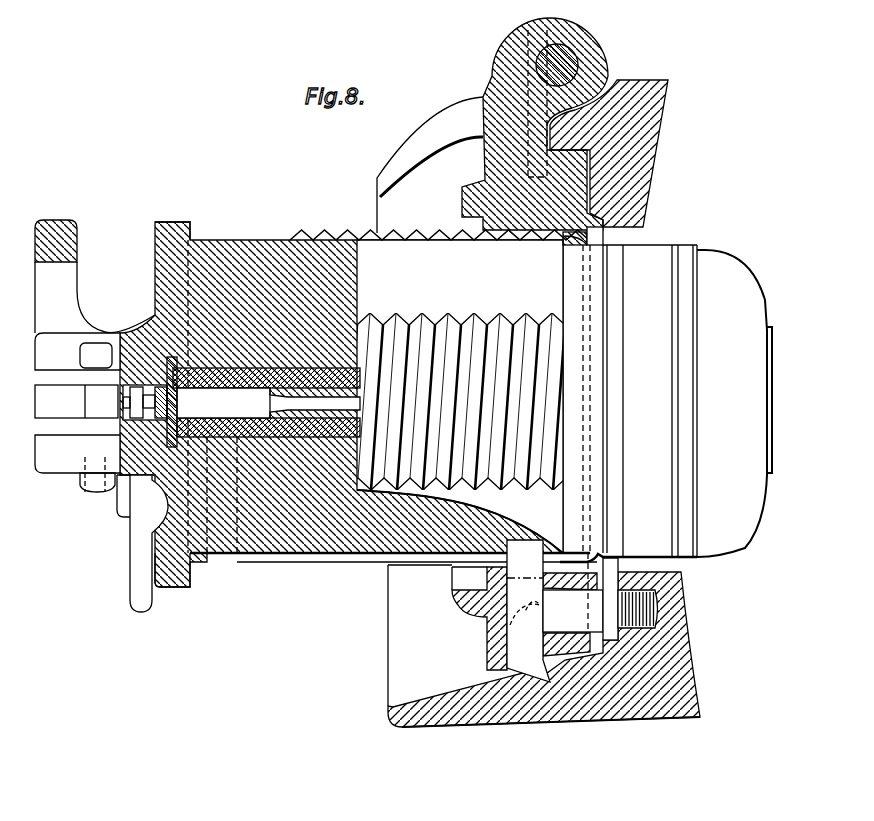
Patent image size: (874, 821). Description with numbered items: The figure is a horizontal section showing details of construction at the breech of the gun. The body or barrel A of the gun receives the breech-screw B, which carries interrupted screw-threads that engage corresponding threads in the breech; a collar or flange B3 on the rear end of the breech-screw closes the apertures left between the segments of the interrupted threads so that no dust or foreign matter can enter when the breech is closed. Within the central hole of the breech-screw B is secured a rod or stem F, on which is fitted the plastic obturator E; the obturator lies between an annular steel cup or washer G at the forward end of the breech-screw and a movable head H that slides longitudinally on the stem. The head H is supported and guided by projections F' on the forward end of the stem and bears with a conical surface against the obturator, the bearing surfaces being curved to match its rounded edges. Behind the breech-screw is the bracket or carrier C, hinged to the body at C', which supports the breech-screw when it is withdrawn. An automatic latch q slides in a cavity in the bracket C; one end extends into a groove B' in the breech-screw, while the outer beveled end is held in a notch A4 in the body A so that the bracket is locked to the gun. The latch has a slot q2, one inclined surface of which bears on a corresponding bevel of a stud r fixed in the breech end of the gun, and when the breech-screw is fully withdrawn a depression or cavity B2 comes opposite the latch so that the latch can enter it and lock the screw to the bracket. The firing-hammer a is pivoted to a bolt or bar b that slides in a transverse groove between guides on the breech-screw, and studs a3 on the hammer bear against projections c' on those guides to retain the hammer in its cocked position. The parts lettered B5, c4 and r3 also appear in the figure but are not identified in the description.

The body or barrel of the gun A is at (544, 403).
The notch in the body A4 is at (548, 683).
The breech-screw B is at (361, 404).
The groove in the breech-screw B' is at (403, 571).
The depression or cavity B2 is at (500, 537).
The collar or flange B3 is at (172, 570).
The lug B5 is at (172, 231).
The bracket or carrier C is at (321, 344).
The hinge or pivot of the bracket C' is at (579, 62).
The projections on the guides c' is at (95, 316).
The hook arm c4 is at (75, 452).
The firing-hammer a is at (76, 401).
The studs or projections a3 is at (95, 400).
The bolt or bar b is at (150, 402).
The rod or stem F is at (266, 402).
The projections or guides on the rod F' is at (778, 400).
The annular steel cup or washer G is at (599, 439).
The plastic obturator E is at (628, 403).
The movable head H is at (732, 403).
The automatic latch q is at (528, 611).
The slot in the latch q2 is at (524, 592).
The stud r is at (600, 599).
The screw detail r3 is at (524, 615).